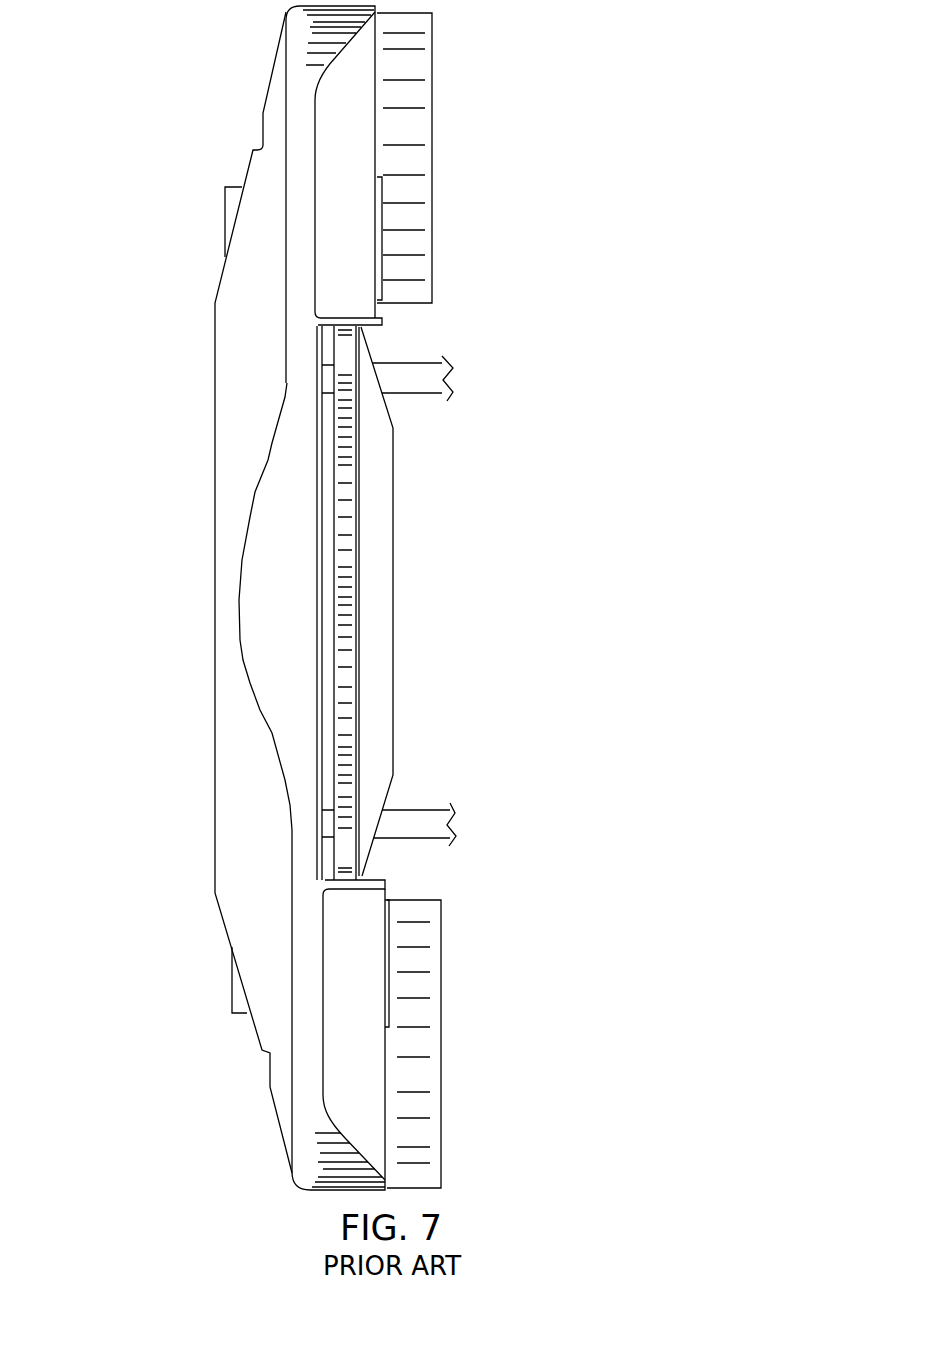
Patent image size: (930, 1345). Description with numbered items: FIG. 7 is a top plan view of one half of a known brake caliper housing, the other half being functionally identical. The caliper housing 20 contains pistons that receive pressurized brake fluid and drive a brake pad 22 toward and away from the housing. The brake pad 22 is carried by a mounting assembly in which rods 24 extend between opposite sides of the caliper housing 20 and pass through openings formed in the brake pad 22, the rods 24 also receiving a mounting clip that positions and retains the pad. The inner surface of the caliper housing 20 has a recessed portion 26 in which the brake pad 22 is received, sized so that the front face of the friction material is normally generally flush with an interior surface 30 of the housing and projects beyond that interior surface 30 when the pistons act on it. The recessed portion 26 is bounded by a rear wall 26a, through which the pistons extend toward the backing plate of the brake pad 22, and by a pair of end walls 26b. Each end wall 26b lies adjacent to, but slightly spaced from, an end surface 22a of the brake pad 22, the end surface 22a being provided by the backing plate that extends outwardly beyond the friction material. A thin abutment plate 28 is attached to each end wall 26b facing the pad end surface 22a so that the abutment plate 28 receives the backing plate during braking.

The caliper housing 20 is at (285, 640).
The brake pad 22 is at (388, 620).
The end surface 22a is at (318, 337).
The rod 24 is at (418, 387).
The recessed portion 26 is at (266, 503).
The rear wall 26a is at (318, 383).
The end wall 26b is at (358, 299).
The abutment plate 28 is at (383, 322).
The interior surface 30 is at (373, 125).